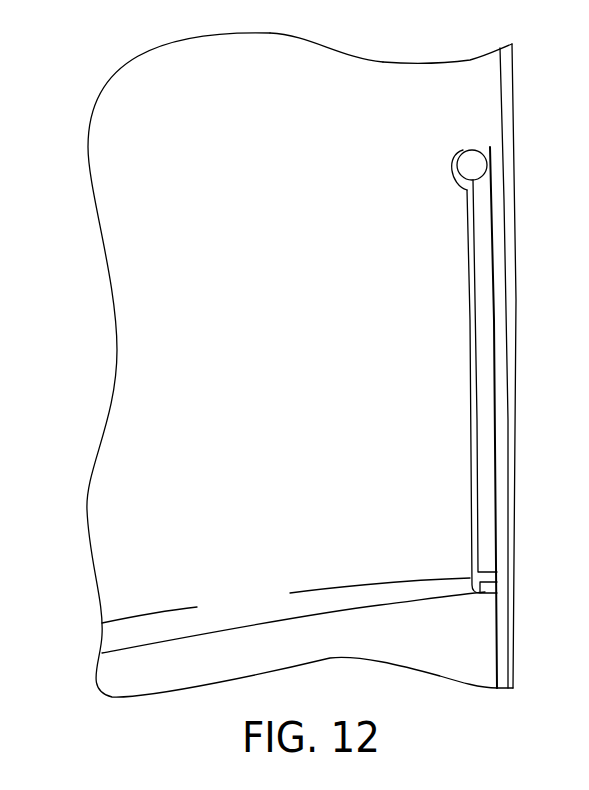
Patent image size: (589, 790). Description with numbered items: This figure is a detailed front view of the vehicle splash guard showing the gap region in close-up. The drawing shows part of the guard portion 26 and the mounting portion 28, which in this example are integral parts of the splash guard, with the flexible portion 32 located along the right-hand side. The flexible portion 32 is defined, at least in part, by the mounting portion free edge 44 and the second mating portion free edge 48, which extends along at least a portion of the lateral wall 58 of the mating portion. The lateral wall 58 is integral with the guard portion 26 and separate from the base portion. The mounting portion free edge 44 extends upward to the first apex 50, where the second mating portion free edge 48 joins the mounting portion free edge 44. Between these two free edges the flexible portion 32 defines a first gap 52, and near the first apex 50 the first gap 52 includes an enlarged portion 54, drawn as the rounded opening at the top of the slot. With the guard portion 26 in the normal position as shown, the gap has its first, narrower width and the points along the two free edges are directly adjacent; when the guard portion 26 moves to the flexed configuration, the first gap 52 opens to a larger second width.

The guard portion 26 is at (147, 643).
The mounting portion 28 is at (160, 390).
The flexible portion 32 is at (478, 97).
The mounting portion free edge 44 is at (467, 339).
The second mating portion free edge 48 is at (495, 302).
The first apex 50 is at (462, 148).
The first gap 52 is at (486, 589).
The enlarged portion 54 is at (477, 169).
The lateral wall 58 is at (508, 369).